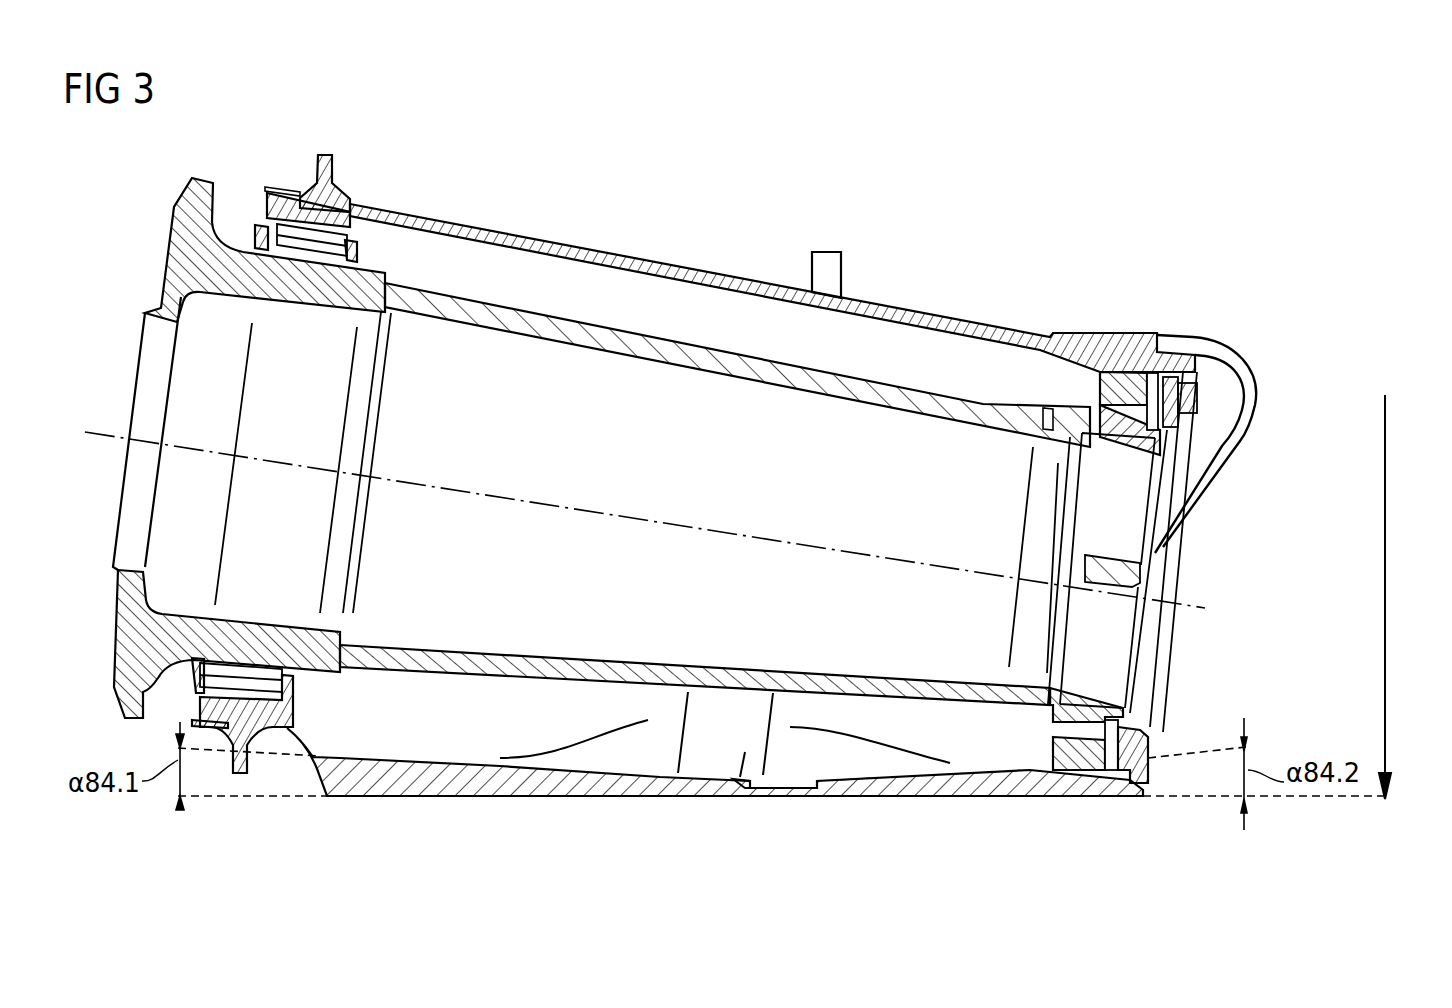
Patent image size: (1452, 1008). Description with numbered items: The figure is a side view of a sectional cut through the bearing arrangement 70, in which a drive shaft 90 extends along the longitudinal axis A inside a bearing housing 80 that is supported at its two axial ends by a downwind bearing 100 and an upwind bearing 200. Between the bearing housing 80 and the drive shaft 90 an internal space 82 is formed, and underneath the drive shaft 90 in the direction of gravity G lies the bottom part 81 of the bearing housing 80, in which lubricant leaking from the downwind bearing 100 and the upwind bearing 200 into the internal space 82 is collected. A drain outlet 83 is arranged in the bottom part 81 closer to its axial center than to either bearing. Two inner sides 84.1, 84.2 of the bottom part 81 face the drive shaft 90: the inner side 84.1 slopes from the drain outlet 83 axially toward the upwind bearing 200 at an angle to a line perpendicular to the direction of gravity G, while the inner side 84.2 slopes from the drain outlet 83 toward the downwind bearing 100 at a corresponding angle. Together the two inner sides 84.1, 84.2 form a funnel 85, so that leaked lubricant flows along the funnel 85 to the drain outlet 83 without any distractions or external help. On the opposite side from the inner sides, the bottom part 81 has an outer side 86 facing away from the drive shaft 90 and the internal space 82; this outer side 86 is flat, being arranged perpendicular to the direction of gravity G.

The bearing arrangement 70 is at (612, 245).
The bearing housing 80 is at (742, 300).
The drive shaft 90 is at (915, 425).
The downwind bearing 100 is at (1125, 365).
The upwind bearing 200 is at (330, 212).
The bottom part 81 is at (440, 796).
The internal space 82 is at (727, 788).
The drain outlet 83 is at (783, 790).
The inner side 84.1 is at (578, 764).
The inner side 84.2 is at (910, 776).
The funnel 85 is at (847, 779).
The outer side 86 is at (685, 792).
The longitudinal axis A is at (106, 432).
The direction of gravity G is at (1387, 598).